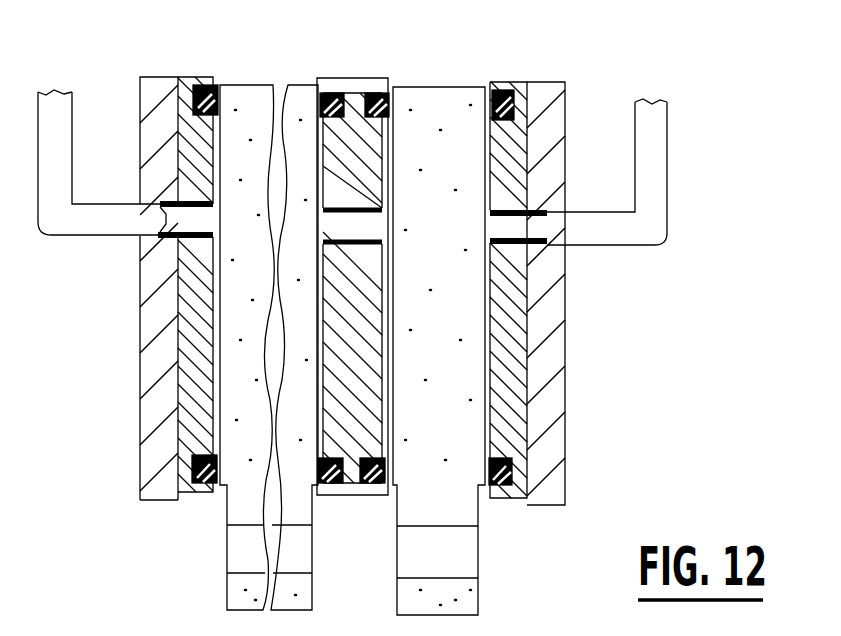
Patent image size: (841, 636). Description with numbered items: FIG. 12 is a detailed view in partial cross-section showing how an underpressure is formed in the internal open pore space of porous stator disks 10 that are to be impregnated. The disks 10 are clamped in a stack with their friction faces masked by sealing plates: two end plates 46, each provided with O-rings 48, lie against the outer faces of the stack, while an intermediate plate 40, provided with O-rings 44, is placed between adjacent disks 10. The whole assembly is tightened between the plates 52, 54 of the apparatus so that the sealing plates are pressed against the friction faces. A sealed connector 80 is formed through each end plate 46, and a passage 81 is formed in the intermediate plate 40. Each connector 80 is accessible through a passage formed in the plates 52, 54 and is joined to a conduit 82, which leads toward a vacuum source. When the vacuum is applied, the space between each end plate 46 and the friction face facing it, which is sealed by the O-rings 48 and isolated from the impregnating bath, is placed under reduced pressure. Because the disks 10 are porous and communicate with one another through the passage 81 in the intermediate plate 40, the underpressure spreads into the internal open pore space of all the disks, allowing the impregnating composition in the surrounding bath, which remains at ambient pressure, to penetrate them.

The stator disk 10 is at (230, 298).
The intermediate plate 40 is at (363, 412).
The O-ring 44 is at (378, 78).
The end plate 46 is at (183, 428).
The O-ring 48 is at (203, 82).
The plate 52 is at (158, 373).
The plate 54 is at (550, 120).
The sealed connector 80 is at (220, 223).
The passage 81 is at (360, 227).
The conduit 82 is at (90, 223).